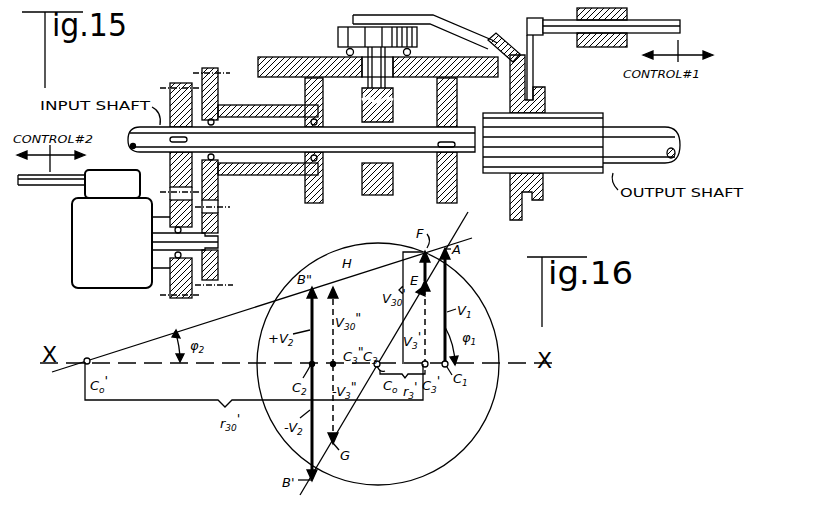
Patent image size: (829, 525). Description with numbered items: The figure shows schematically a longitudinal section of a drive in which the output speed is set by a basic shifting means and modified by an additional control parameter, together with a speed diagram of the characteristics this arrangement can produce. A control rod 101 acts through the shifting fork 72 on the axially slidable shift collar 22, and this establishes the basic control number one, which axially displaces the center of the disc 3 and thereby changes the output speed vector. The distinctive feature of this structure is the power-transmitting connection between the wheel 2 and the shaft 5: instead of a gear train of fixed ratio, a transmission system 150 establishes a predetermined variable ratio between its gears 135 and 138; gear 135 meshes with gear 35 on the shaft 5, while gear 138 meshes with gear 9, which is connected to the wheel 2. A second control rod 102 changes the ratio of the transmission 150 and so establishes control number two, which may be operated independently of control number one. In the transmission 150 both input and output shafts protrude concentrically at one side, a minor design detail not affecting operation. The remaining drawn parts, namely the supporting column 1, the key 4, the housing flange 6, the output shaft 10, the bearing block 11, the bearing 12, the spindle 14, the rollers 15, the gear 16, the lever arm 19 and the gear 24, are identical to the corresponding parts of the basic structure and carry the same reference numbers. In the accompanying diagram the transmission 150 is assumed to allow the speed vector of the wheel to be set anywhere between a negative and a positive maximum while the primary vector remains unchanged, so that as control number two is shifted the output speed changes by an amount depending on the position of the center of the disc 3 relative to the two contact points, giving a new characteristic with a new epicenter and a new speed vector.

In FIG. 15, the support column 1 is at (457, 185).
In FIG. 15, the wheel 2 is at (307, 194).
In FIG. 15, the disc 3 is at (272, 57).
In FIG. 16, the disc 3 is at (467, 280).
In FIG. 15, the key 4 is at (440, 142).
In FIG. 15, the shaft 5 is at (408, 145).
In FIG. 15, the housing flange 6 is at (262, 170).
In FIG. 15, the gear 9 is at (218, 206).
In FIG. 15, the output shaft 10 is at (648, 133).
In FIG. 15, the bearing block 11 is at (393, 113).
In FIG. 15, the bearing 12 is at (393, 79).
In FIG. 15, the spindle 14 is at (373, 80).
In FIG. 15, the rollers 15 is at (413, 53).
In FIG. 15, the gear 16 is at (338, 33).
In FIG. 15, the lever arm 19 is at (455, 24).
In FIG. 15, the shift collar 22 is at (538, 88).
In FIG. 15, the gear 24 is at (567, 116).
In FIG. 15, the gear 35 is at (173, 163).
In FIG. 15, the shifting fork 72 is at (534, 58).
In FIG. 15, the control rod 101 is at (657, 24).
In FIG. 15, the control rod 102 is at (27, 185).
In FIG. 15, the gear 135 is at (170, 284).
In FIG. 15, the gear 138 is at (219, 227).
In FIG. 15, the variable ratio transmission 150 is at (77, 275).